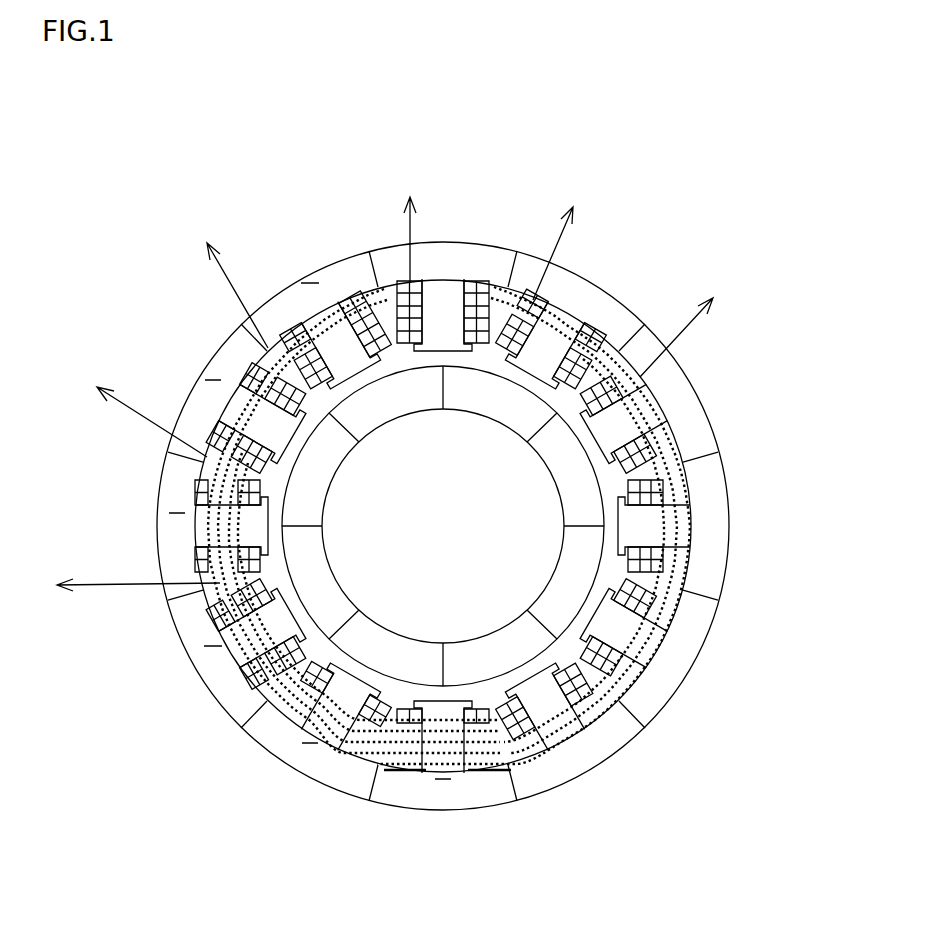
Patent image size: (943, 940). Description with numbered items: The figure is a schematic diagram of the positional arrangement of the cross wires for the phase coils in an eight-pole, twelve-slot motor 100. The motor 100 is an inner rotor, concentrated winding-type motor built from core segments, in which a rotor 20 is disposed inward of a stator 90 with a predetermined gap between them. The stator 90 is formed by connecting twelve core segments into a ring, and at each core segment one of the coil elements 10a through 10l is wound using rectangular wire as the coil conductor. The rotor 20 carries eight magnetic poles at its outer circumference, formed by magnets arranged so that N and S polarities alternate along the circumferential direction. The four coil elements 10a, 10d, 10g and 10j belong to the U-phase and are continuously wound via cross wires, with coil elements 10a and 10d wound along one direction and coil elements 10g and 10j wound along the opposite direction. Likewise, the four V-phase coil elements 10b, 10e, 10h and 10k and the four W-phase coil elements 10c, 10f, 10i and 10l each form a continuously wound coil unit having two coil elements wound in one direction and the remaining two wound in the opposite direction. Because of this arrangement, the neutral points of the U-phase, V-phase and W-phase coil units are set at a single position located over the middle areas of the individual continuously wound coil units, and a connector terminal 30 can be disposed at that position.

The motor 100 is at (150, 753).
The stator 90 is at (387, 257).
The rotor 20 is at (606, 497).
The connector terminal 30 is at (503, 773).
The coil element 10a is at (487, 280).
The coil element 10b is at (600, 333).
The coil element 10c is at (697, 400).
The coil element 10d is at (697, 557).
The coil element 10e is at (697, 660).
The coil element 10f is at (594, 718).
The coil element 10g is at (477, 773).
The coil element 10h is at (353, 750).
The coil element 10i is at (238, 683).
The coil element 10j is at (197, 573).
The coil element 10k is at (240, 375).
The coil element 10l is at (287, 333).